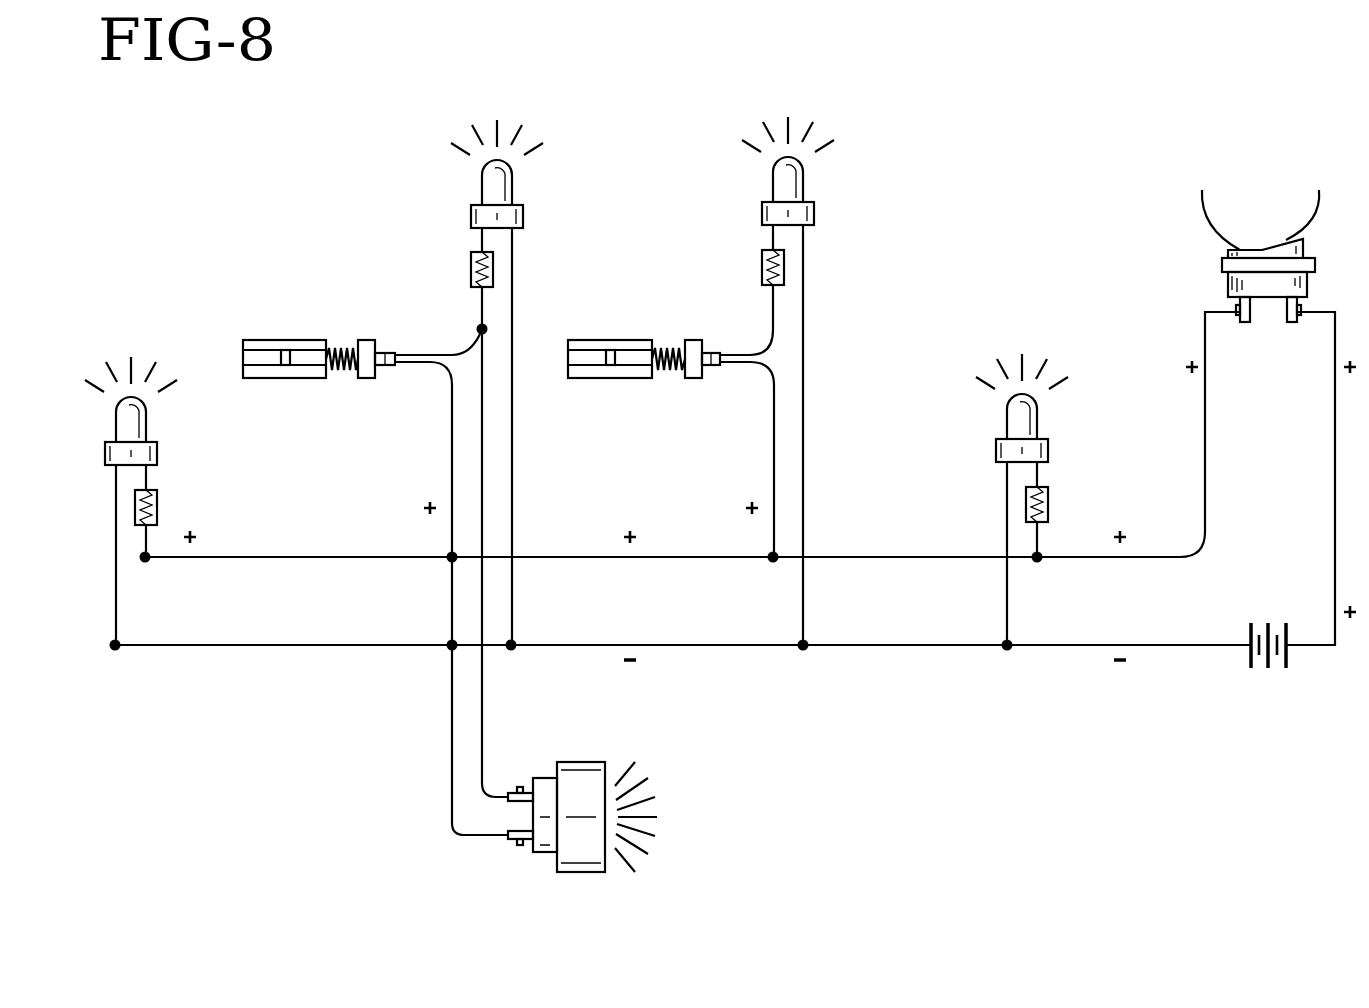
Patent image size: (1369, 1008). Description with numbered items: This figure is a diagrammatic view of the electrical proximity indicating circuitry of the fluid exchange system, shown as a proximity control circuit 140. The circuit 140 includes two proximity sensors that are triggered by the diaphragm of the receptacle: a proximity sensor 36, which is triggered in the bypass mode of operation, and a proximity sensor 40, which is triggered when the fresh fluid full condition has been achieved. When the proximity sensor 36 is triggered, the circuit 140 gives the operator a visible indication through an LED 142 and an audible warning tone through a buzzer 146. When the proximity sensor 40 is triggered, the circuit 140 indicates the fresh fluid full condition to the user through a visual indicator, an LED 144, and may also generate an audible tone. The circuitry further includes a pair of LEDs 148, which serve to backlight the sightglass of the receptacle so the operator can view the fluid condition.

The proximity control circuit 140 is at (638, 150).
The proximity sensor 36 is at (290, 340).
The proximity sensor 40 is at (615, 340).
The LED 142 is at (525, 211).
The LED 144 is at (815, 209).
The buzzer 146 is at (605, 762).
The LEDs 148 is at (157, 447).